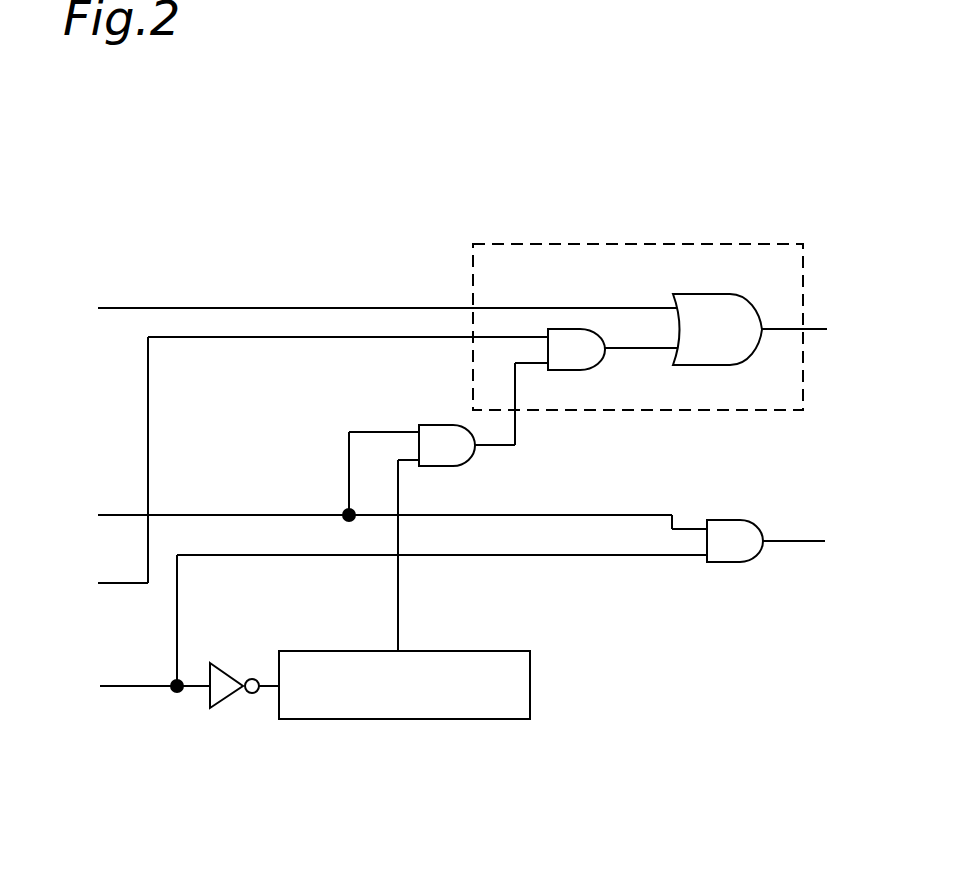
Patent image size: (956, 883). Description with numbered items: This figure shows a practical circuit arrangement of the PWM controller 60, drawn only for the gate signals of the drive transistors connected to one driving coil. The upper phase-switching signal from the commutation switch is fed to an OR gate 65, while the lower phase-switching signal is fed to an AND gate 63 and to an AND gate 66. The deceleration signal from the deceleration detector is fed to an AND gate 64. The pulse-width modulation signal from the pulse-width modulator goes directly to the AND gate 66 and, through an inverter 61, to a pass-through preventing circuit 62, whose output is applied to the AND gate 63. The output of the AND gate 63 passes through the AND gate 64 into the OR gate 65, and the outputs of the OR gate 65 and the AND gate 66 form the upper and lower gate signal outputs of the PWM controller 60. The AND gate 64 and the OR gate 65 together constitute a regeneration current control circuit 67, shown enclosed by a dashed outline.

The PWM controller 60 is at (348, 196).
The inverter 61 is at (222, 664).
The pass-through preventing circuit 62 is at (462, 649).
The AND gate 63 is at (448, 466).
The AND gate 64 is at (575, 370).
The OR gate 65 is at (707, 292).
The AND gate 66 is at (722, 519).
The regeneration current control circuit 67 is at (622, 243).